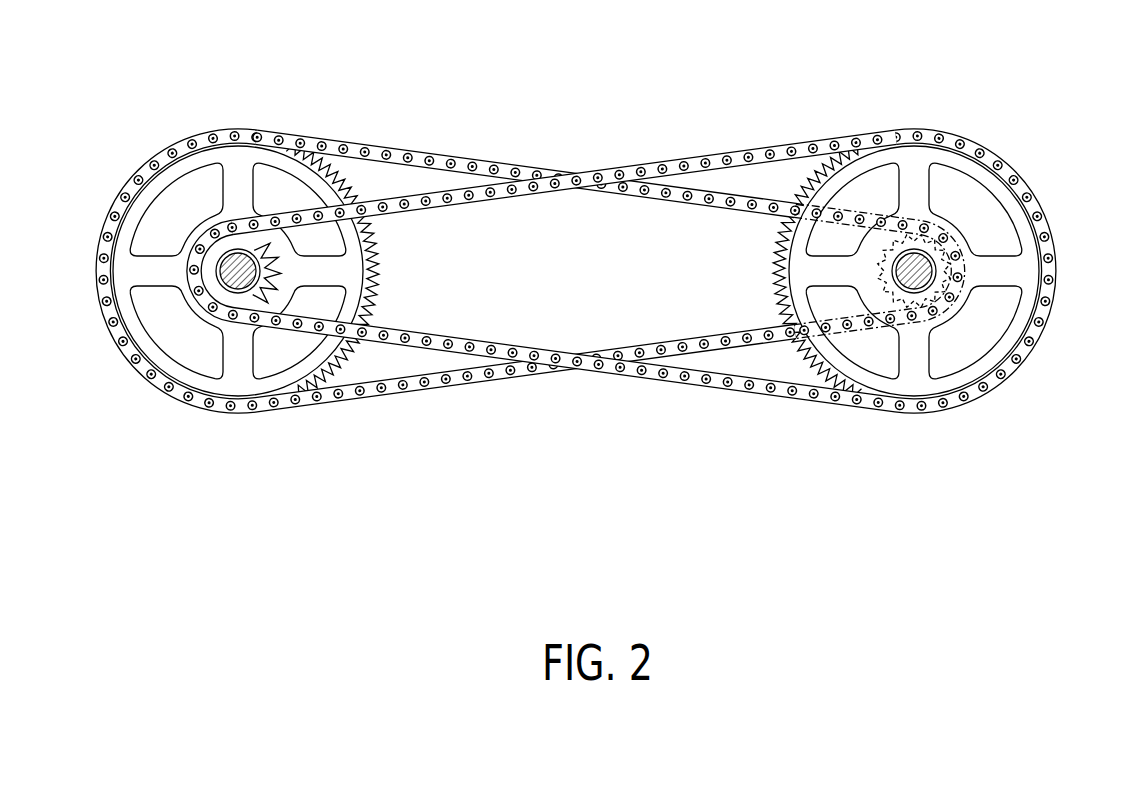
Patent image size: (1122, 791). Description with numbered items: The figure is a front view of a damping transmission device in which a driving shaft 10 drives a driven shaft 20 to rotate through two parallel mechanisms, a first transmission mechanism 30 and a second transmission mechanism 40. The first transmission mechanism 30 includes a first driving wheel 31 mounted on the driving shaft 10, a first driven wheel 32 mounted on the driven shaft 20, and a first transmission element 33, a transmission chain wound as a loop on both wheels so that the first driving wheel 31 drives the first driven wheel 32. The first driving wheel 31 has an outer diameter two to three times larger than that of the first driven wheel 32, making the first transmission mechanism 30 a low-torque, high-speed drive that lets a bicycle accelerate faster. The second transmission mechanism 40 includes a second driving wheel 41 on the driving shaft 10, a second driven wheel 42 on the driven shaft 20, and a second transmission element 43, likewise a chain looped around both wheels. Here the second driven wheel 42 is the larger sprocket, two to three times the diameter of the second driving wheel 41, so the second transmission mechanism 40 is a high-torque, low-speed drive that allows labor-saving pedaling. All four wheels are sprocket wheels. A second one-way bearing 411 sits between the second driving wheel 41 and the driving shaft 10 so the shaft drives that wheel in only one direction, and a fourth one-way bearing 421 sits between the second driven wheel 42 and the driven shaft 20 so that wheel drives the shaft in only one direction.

The driving shaft 10 is at (242, 283).
The driven shaft 20 is at (937, 280).
The first transmission mechanism 30 is at (533, 208).
The first driving wheel 31 is at (246, 185).
The first driven wheel 32 is at (947, 238).
The first transmission element 33 is at (485, 165).
The second transmission mechanism 40 is at (621, 209).
The second driving wheel 41 is at (181, 270).
The second one-way bearing 411 is at (220, 260).
The second driven wheel 42 is at (925, 188).
The fourth one-way bearing 421 is at (917, 297).
The second transmission element 43 is at (722, 158).